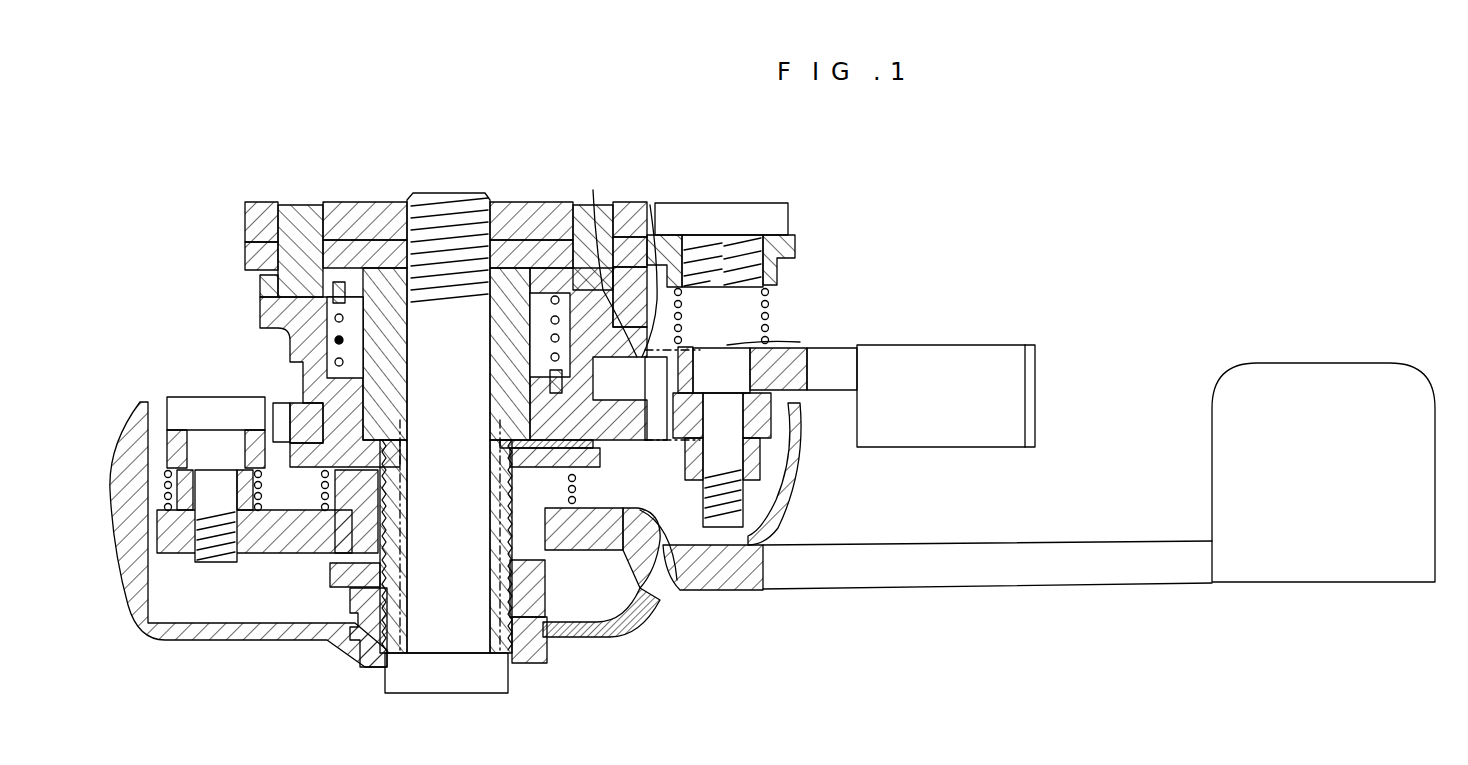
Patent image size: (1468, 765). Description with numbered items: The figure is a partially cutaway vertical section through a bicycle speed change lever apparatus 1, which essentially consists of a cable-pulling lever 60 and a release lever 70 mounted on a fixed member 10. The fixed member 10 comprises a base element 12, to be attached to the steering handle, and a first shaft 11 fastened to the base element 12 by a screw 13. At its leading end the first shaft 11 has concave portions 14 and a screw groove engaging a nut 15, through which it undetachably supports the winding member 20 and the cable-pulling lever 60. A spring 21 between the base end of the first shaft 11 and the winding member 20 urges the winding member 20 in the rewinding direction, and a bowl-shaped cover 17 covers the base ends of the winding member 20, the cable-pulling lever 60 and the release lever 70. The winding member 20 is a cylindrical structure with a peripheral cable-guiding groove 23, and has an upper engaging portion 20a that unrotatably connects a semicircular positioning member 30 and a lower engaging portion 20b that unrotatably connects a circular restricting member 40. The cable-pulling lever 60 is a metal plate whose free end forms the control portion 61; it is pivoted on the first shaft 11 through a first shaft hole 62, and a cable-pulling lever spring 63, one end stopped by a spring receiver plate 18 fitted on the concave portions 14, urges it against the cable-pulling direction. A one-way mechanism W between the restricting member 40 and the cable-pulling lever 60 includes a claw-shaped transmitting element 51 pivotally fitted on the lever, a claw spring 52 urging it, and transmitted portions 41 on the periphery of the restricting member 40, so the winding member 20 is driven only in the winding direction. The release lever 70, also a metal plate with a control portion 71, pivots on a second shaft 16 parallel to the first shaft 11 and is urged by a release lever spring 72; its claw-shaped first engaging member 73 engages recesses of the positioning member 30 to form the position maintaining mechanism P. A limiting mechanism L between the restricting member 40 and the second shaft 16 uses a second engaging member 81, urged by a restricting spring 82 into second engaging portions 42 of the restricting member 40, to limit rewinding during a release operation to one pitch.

The speed change lever apparatus 1 is at (433, 152).
The one-way mechanism W is at (145, 318).
The fixed member 10 is at (543, 197).
The first shaft 11 is at (400, 405).
The base element 12 is at (354, 245).
The screw 13 is at (425, 685).
The concave portions 14 is at (523, 673).
The nut 15 is at (370, 637).
The second shaft 16 is at (790, 258).
The bowl-shaped cover 17 is at (220, 642).
The spring receiver plate 18 is at (302, 512).
The winding member 20 is at (290, 352).
The upper engaging portion 20a is at (603, 290).
The lower engaging portion 20b is at (599, 491).
The spring 21 is at (258, 290).
The cable-guiding groove 23 is at (334, 318).
The positioning member 30 is at (650, 205).
The restricting member 40 is at (642, 565).
The transmitted portions 41 is at (283, 422).
The second engaging portions 42 is at (658, 562).
The transmitting element 51 is at (287, 403).
The claw spring 52 is at (165, 488).
The cable-pulling lever 60 is at (1005, 546).
The control portion 61 is at (1322, 363).
The first shaft hole 62 is at (555, 640).
The cable-pulling lever spring 63 is at (576, 552).
The release lever 70 is at (785, 347).
The control portion 71 is at (965, 348).
The release lever spring 72 is at (770, 322).
The first engaging member 73 is at (667, 340).
The second engaging member 81 is at (667, 460).
The restricting spring 82 is at (773, 405).
The limiting mechanism L is at (662, 592).
The position maintaining mechanism P is at (690, 355).